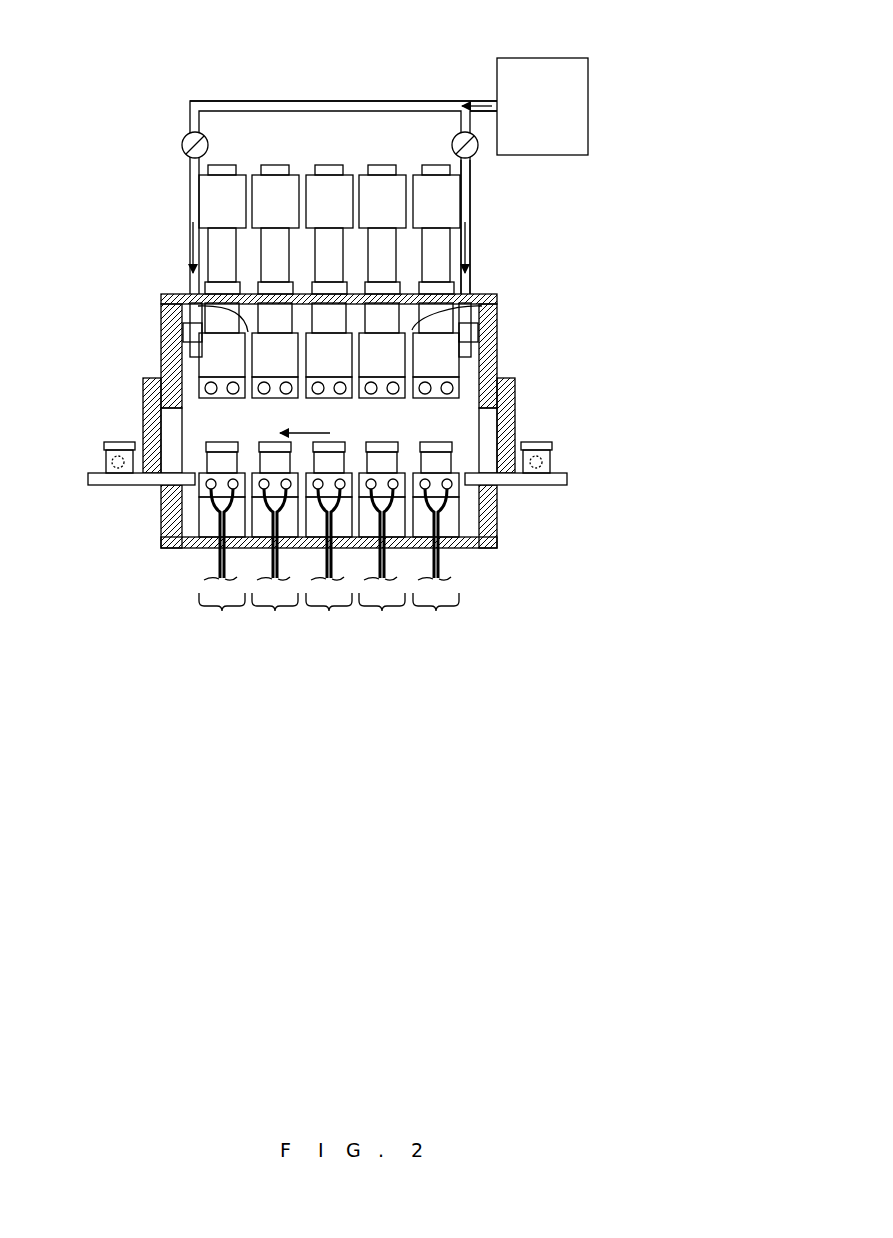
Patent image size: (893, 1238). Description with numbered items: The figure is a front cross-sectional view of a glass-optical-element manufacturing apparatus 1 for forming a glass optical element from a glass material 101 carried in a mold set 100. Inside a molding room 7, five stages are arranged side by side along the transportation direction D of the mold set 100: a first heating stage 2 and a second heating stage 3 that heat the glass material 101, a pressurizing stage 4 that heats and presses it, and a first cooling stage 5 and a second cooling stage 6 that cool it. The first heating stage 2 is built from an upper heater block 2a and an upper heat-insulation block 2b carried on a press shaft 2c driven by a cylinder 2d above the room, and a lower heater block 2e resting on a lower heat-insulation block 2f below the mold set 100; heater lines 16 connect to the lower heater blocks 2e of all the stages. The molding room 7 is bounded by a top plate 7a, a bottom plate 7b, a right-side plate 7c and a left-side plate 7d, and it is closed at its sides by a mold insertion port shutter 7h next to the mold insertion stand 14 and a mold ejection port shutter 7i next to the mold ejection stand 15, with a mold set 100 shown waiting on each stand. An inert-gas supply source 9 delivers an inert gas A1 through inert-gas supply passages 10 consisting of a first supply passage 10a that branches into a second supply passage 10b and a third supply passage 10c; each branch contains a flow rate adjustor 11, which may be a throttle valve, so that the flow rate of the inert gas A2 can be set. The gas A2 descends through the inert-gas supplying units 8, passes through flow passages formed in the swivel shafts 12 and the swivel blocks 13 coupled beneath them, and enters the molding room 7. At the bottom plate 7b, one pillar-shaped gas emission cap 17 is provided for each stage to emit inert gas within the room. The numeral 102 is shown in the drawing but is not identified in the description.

The glass-optical-element manufacturing apparatus 1 is at (103, 117).
The first heating stage 2 is at (436, 617).
The second heating stage 3 is at (382, 617).
The pressurizing stage 4 is at (329, 617).
The first cooling stage 5 is at (275, 617).
The second cooling stage 6 is at (222, 617).
The upper heater block 2a is at (461, 390).
The upper heat-insulation block 2b is at (456, 370).
The press shaft 2c is at (457, 286).
The cylinder 2d is at (458, 196).
The lower heater block 2e is at (205, 490).
The lower heat-insulation block 2f is at (205, 518).
The molding room 7 is at (162, 328).
The top plate 7a is at (480, 296).
The bottom plate 7b is at (483, 545).
The right-side plate 7c is at (491, 350).
The left-side plate 7d is at (172, 368).
The mold insertion port shutter 7h is at (514, 413).
The mold ejection port shutter 7i is at (146, 395).
The inert-gas supplying unit 8 is at (186, 297).
The inert-gas supply source 9 is at (566, 153).
The inert-gas supply passages 10 is at (282, 101).
The first supply passage 10a is at (481, 100).
The second supply passage 10b is at (470, 210).
The third supply passage 10c is at (320, 101).
The flow rate adjustor 11 is at (208, 148).
The swivel shaft 12 is at (166, 307).
The swivel block 13 is at (190, 338).
The mold insertion stand 14 is at (567, 480).
The mold ejection stand 15 is at (88, 474).
The heater lines 16 is at (441, 566).
The gas emission cap 17 is at (451, 549).
The mold set 100 is at (115, 442).
The glass material 101 is at (540, 468).
The left sensor 102 is at (117, 468).
The inert gas A1 is at (464, 104).
The inert gas A2 is at (190, 237).
The transportation direction D is at (305, 421).